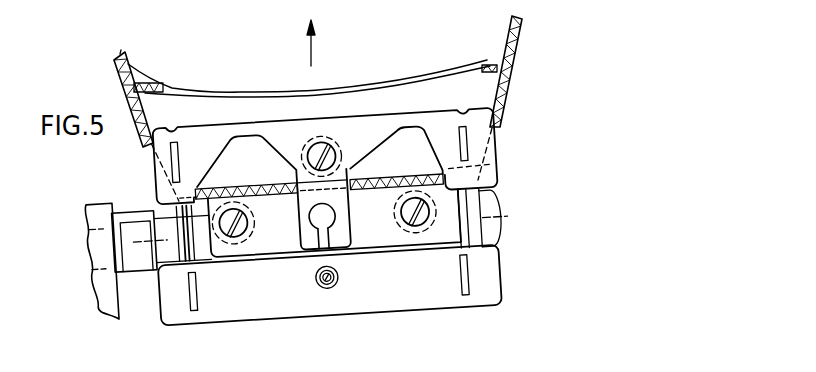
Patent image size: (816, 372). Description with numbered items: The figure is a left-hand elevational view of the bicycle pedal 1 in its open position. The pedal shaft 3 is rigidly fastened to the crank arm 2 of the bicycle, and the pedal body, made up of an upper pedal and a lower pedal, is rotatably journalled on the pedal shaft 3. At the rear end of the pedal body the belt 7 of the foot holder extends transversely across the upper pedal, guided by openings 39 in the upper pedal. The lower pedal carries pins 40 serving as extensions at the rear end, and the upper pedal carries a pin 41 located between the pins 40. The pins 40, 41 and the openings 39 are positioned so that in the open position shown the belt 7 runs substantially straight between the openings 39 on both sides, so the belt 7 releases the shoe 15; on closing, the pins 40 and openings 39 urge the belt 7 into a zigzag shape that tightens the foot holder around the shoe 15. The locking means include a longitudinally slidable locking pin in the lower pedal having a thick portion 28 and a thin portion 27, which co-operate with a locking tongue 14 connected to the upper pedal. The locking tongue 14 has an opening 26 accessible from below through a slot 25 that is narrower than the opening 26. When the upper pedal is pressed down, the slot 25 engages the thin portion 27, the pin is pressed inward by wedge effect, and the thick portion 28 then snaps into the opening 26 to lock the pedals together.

The bicycle pedal 1 is at (512, 272).
The crank arm 2 is at (93, 212).
The pedal shaft 3 is at (145, 268).
The belt 7 is at (505, 82).
The locking tongue 14 is at (305, 206).
The shoe 15 is at (237, 92).
The slot 25 is at (326, 242).
The opening 26 is at (333, 217).
The thin portion 27 is at (317, 276).
The thick portion 28 is at (331, 289).
The openings 39 is at (472, 168).
The pins 40 is at (238, 238).
The pin 41 is at (337, 160).